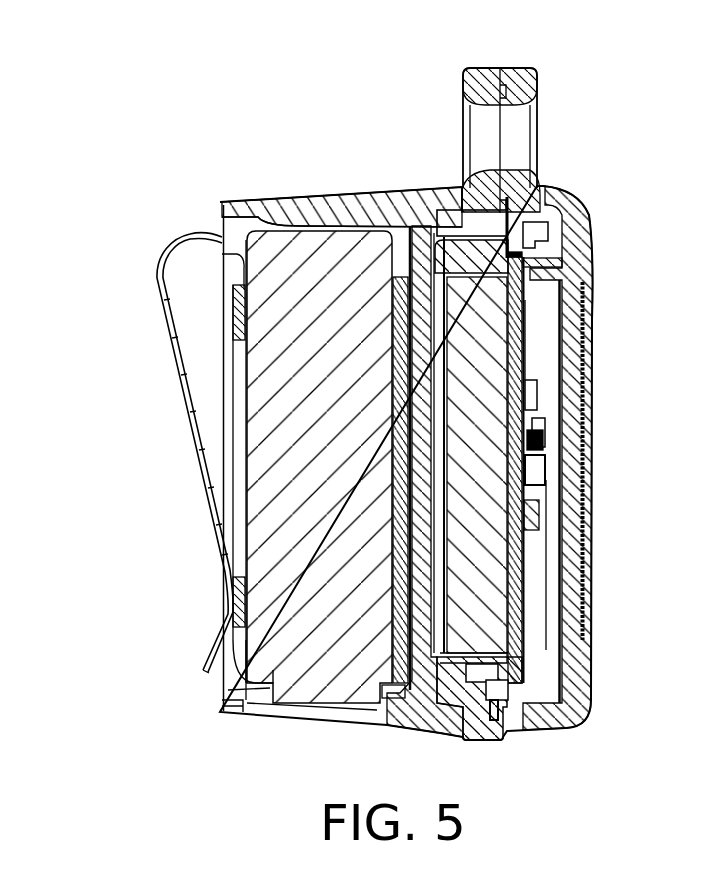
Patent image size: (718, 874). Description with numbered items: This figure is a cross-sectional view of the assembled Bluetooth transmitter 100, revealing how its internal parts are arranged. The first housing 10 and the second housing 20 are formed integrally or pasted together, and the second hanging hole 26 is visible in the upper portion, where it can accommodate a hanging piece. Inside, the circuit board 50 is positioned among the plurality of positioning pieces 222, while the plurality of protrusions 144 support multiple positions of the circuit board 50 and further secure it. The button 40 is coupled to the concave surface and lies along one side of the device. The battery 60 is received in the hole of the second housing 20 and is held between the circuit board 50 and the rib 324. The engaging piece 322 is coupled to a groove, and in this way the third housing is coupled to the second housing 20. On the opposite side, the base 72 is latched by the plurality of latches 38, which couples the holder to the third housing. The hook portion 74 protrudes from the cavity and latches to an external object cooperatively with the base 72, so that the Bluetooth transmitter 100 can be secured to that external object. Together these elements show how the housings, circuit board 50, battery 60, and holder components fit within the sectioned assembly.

The Bluetooth transmitter 100 is at (346, 47).
The first housing 10 is at (523, 92).
The second housing 20 is at (478, 93).
The second hanging hole 26 is at (521, 137).
The engaging piece 322 is at (528, 233).
The protrusions 144 is at (540, 265).
The circuit board 50 is at (520, 335).
The button 40 is at (588, 432).
The battery 60 is at (487, 597).
The positioning pieces 222 is at (523, 720).
The latches 38 is at (227, 670).
The hook portion 74 is at (187, 371).
The base 72 is at (290, 253).
The rib 324 is at (380, 297).